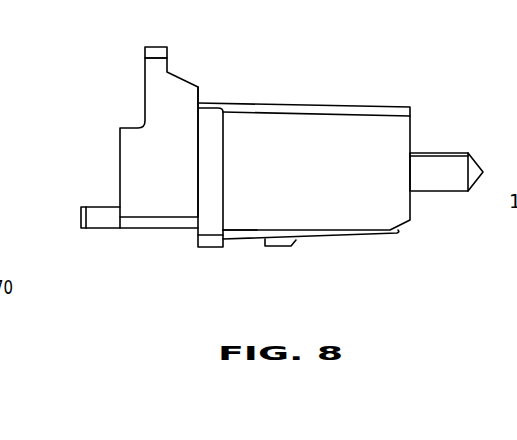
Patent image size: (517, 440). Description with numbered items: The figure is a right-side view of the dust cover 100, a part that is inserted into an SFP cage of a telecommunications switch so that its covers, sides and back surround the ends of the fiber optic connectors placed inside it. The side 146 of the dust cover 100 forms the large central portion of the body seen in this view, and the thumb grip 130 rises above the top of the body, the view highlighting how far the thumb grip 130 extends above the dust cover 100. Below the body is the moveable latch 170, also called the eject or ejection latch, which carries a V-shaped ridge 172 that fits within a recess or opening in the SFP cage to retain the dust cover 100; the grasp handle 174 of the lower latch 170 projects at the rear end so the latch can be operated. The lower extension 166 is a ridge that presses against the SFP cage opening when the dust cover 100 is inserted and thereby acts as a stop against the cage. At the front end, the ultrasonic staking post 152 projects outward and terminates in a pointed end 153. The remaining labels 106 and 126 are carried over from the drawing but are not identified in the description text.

The dust cover 100 is at (322, 106).
The housing 106 is at (0, 128).
The cover 126 is at (0, 40).
The thumb grip 130 is at (157, 48).
The side 146 is at (352, 191).
The ultrasonic staking post 152 is at (439, 193).
The pointed end 153 is at (473, 163).
The lower extension 166 is at (210, 248).
The moveable latch 170 is at (247, 241).
The V-shaped ridge 172 is at (280, 247).
The grasp handle 174 is at (98, 230).